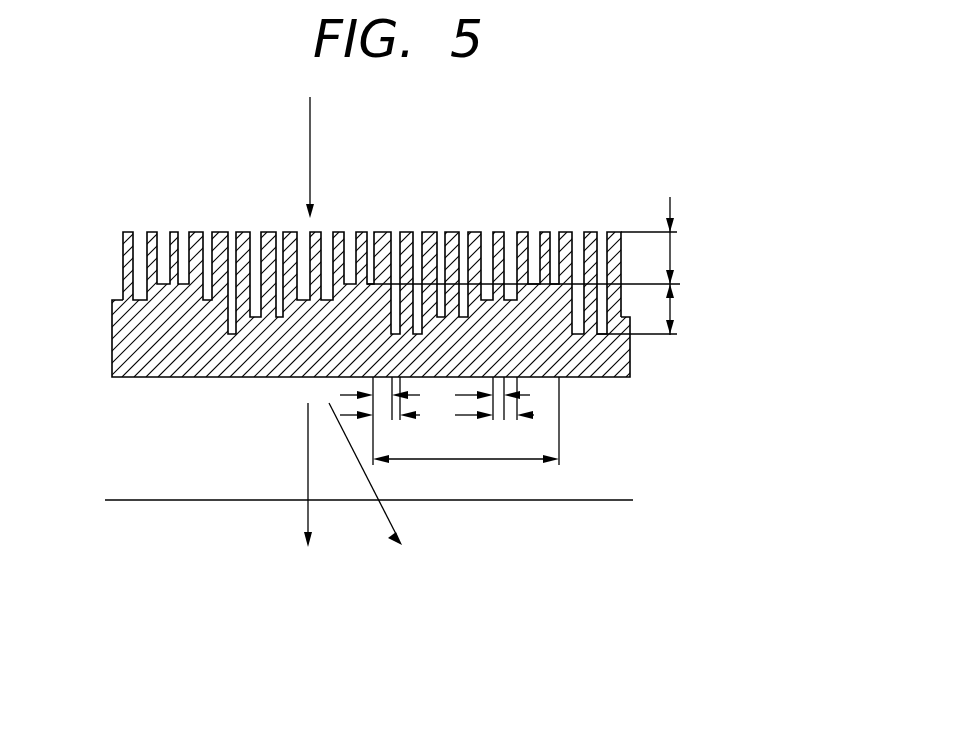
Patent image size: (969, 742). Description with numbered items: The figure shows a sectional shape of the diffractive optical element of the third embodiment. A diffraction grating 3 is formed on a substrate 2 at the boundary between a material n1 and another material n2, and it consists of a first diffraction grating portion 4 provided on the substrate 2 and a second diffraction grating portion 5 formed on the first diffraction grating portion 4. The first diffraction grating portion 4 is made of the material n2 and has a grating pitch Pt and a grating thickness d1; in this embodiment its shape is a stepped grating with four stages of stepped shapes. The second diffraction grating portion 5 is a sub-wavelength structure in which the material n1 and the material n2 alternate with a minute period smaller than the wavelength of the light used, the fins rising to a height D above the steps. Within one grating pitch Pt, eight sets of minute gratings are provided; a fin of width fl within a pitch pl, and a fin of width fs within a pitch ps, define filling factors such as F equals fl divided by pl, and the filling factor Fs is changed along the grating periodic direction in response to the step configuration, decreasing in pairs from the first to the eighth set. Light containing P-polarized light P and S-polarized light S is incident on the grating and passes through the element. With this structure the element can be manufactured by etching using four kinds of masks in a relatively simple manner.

The substrate 2 is at (609, 475).
The diffraction grating 3 is at (385, 304).
The first diffraction grating portion 4 is at (350, 338).
The second diffraction grating portion 5 is at (123, 247).
The material n1(λ) n1 is at (258, 213).
The material n2(λ) n2 is at (220, 360).
The P-polarized light P is at (310, 492).
The S-polarized light S is at (374, 490).
The grating height D is at (532, 266).
The grating thickness d1 is at (653, 309).
The fin width fl is at (391, 421).
The grating pitch P1 pl is at (392, 410).
The fin width fs is at (506, 398).
The grating pitch Ps ps is at (506, 410).
The grating pitch Pt is at (466, 433).